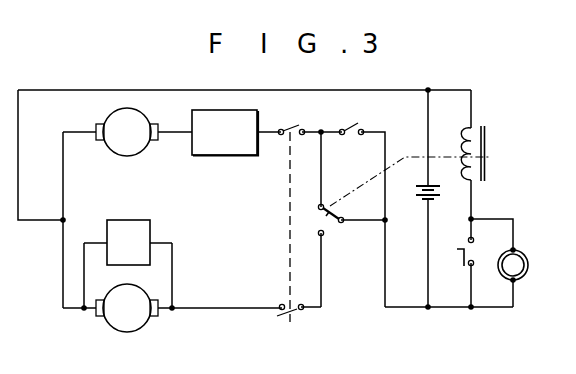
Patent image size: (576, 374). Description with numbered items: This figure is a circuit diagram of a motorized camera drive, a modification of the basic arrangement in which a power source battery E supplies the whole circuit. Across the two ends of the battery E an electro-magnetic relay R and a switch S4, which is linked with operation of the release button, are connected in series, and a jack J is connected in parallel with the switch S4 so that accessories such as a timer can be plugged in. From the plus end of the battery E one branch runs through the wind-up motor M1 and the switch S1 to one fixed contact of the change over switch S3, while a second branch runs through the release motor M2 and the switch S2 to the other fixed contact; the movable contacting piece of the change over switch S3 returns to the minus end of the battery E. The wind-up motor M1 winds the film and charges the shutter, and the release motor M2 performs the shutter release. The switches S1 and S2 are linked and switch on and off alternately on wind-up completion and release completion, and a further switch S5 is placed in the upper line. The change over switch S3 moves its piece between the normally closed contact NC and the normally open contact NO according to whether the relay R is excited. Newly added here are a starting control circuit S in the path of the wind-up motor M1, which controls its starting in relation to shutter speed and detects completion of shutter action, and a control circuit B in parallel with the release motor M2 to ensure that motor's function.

The wind-up motor M1 is at (127, 148).
The release motor M2 is at (138, 318).
The starting control circuit S is at (225, 133).
The switch S1 is at (283, 129).
The switch S2 is at (299, 323).
The change over switch S3 is at (320, 219).
The switch S4 is at (454, 244).
The switch S5 is at (352, 117).
The normally closed contact NC is at (323, 204).
The normally open contact NO is at (337, 244).
The control circuit B is at (128, 242).
The power source battery E is at (436, 194).
The electro-magnetic relay R is at (483, 153).
The jack J is at (517, 257).